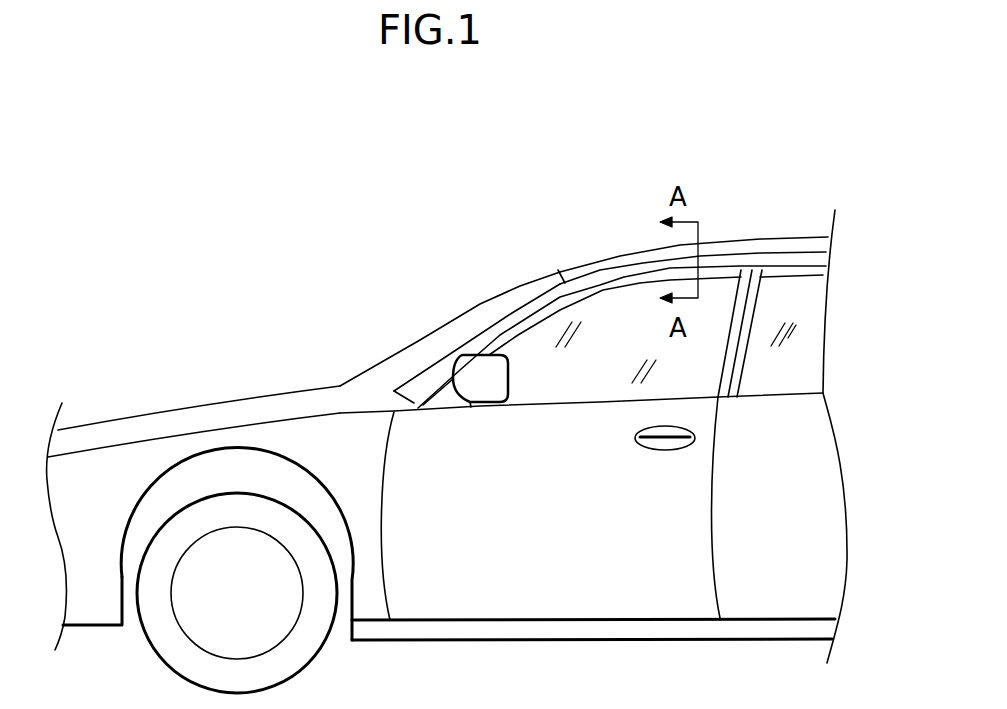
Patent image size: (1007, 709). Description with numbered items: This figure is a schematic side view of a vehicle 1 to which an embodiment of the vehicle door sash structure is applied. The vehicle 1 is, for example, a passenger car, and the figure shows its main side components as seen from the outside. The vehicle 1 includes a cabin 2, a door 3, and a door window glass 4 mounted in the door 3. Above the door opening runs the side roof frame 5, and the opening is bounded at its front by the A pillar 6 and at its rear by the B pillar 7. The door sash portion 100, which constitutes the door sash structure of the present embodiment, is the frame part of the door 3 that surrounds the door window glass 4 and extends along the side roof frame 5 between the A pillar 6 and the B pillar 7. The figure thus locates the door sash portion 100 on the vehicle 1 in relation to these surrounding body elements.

The vehicle 1 is at (166, 222).
The cabin 2 is at (800, 193).
The door 3 is at (658, 487).
The door window glass 4 is at (683, 372).
The side roof frame 5 is at (643, 263).
The A pillar 6 is at (512, 313).
The B pillar 7 is at (745, 312).
The door sash portion 100 is at (624, 277).